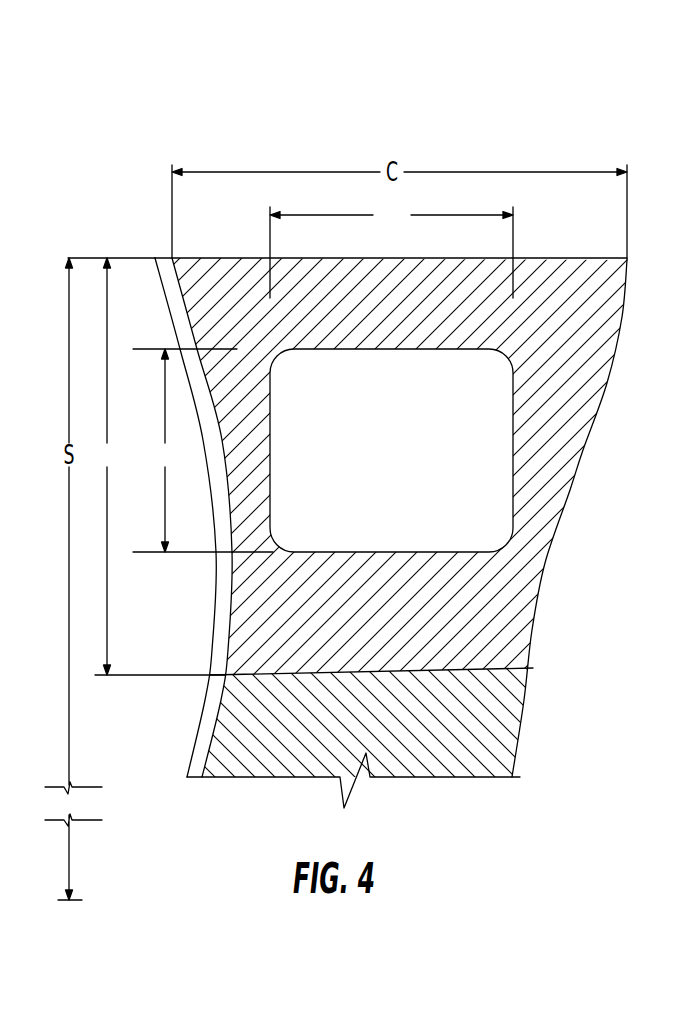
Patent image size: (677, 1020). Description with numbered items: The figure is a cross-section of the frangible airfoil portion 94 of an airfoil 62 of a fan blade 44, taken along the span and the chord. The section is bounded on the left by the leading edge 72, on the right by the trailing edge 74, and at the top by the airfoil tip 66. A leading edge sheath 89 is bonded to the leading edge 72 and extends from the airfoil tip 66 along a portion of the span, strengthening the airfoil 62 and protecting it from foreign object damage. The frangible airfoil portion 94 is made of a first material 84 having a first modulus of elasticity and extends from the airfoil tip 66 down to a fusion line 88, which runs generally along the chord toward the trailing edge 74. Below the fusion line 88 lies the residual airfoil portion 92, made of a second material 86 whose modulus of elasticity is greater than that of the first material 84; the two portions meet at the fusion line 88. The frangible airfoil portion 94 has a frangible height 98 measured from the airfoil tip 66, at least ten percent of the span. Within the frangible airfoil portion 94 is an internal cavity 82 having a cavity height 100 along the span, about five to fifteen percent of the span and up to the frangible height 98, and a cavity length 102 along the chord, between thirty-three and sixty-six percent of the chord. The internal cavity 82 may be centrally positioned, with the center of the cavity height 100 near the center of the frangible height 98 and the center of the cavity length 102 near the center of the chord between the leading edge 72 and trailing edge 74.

The fan blade 44 is at (162, 107).
The airfoil 62 is at (542, 68).
The airfoil tip 66 is at (534, 258).
The leading edge 72 is at (228, 634).
The trailing edge 74 is at (545, 565).
The internal cavity 82 is at (379, 456).
The first material 84 is at (527, 605).
The second material 86 is at (514, 695).
The fusion line 88 is at (532, 670).
The leading edge sheath 89 is at (215, 597).
The residual airfoil portion 92 is at (551, 746).
The frangible airfoil portion 94 is at (602, 492).
The frangible height 98 is at (160, 466).
The cavity height 100 is at (203, 450).
The cavity length 102 is at (391, 249).